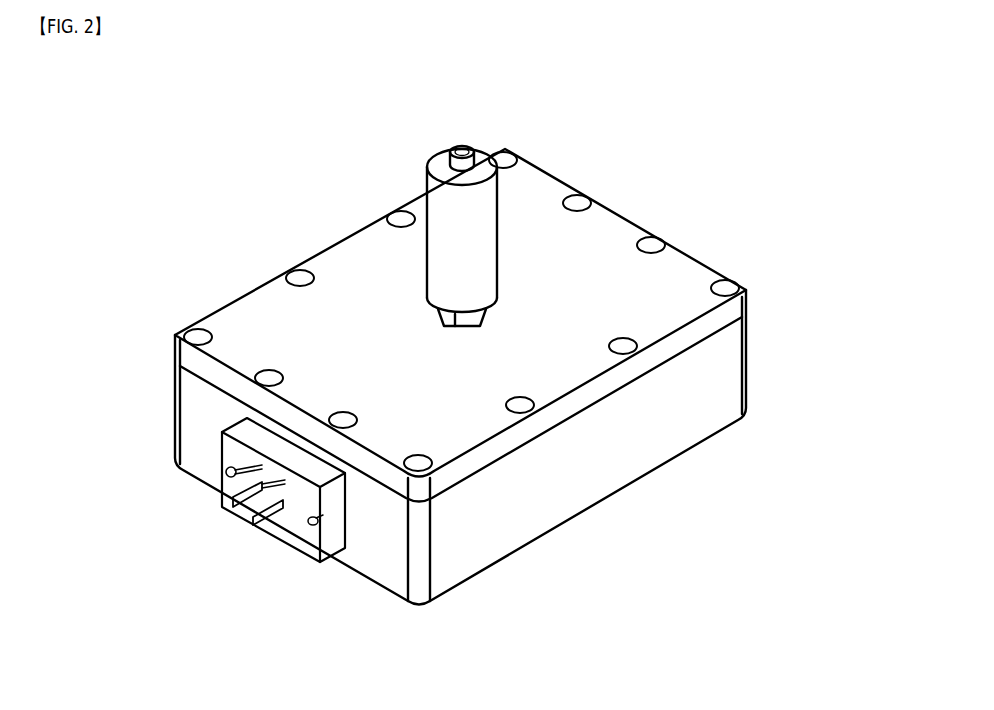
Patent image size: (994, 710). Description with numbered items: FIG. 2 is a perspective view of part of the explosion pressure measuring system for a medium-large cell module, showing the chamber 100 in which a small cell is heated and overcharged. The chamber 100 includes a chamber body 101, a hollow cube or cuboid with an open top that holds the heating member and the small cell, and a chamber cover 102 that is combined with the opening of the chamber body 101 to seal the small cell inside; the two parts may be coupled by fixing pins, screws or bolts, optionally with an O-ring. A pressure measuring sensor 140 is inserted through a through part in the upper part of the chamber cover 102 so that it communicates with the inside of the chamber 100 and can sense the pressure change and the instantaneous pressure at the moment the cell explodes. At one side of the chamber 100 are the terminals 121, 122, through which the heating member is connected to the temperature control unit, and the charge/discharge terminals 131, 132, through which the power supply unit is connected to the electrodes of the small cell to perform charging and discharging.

The chamber 100 is at (860, 262).
The chamber body 101 is at (747, 358).
The chamber cover 102 is at (747, 293).
The pressure measuring sensor 140 is at (489, 212).
The terminal 121 is at (300, 520).
The terminal 122 is at (228, 468).
The charge/discharge terminal 131 is at (253, 527).
The charge/discharge terminal 132 is at (233, 505).